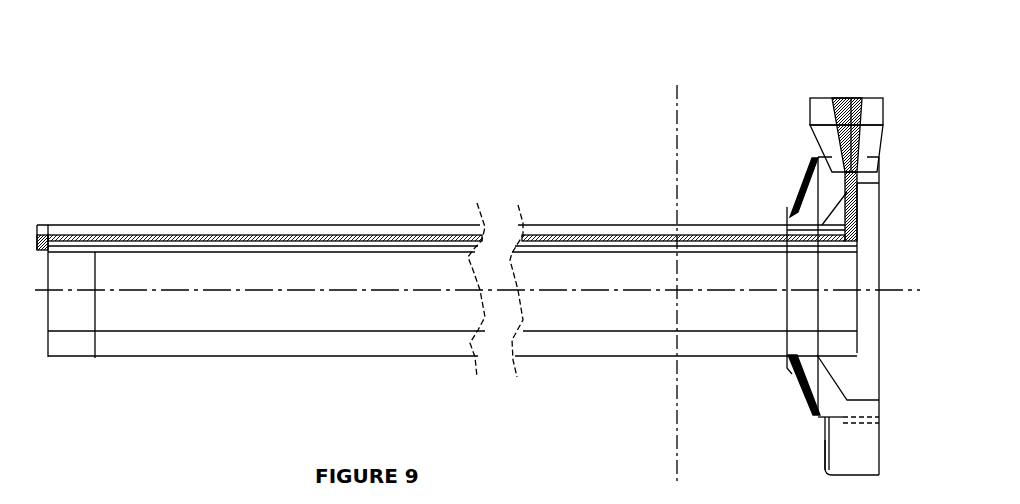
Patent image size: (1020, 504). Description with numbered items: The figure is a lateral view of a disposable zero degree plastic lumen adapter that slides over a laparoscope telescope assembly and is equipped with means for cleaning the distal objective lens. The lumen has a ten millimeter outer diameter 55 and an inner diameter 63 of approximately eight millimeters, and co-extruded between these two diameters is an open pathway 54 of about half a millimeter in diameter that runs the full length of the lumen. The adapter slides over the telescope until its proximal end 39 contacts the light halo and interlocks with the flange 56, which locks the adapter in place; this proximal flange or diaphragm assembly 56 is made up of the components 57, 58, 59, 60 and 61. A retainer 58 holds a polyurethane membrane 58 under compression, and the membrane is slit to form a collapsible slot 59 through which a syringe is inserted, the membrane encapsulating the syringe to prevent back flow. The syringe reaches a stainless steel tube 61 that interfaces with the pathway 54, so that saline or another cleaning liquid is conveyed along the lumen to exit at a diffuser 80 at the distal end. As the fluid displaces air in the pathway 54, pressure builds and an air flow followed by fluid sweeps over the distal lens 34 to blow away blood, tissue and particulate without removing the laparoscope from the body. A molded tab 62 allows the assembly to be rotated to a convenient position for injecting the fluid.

The distal lens 34 is at (73, 278).
The proximal end 39 is at (847, 353).
The open pathway 54 is at (253, 238).
The outer diameter 55 is at (627, 227).
The flange 56 is at (800, 185).
The flange assembly component 57 is at (823, 143).
The retainer and polyurethane membrane 58 is at (833, 118).
The slot 59 is at (850, 103).
The flange assembly component 60 is at (875, 100).
The stainless steel tube 61 is at (857, 230).
The molded tab 62 is at (840, 437).
The inner diameter 63 is at (358, 327).
The diffuser 80 is at (60, 159).